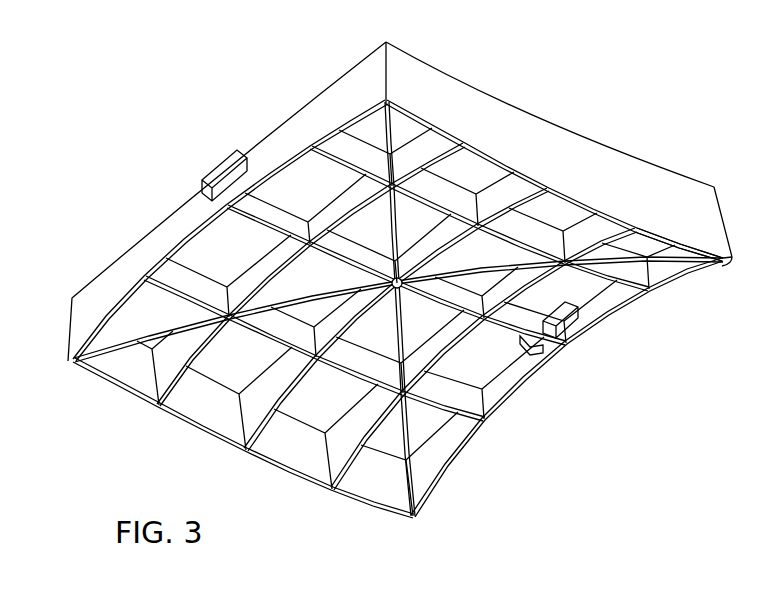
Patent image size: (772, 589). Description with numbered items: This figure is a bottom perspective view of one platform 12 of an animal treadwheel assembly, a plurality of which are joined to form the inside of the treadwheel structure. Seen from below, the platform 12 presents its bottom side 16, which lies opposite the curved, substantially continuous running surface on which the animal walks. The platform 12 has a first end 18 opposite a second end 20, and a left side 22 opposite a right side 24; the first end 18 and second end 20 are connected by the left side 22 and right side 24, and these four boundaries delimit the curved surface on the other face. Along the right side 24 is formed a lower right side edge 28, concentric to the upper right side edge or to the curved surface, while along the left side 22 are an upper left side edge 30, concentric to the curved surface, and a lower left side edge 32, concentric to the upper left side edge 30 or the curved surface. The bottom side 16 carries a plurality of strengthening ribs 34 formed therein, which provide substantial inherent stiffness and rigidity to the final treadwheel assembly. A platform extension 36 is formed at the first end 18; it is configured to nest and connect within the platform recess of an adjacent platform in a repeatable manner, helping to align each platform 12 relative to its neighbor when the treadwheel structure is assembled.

The platform 12 is at (57, 122).
The bottom side 16 is at (481, 358).
The first end 18 is at (125, 270).
The second end 20 is at (631, 303).
The left side 22 is at (574, 148).
The right side 24 is at (155, 408).
The lower right side edge 28 is at (280, 472).
The upper left side edge 30 is at (526, 113).
The lower left side edge 32 is at (690, 247).
The strengthening ribs 34 is at (350, 438).
The platform extension 36 is at (230, 160).